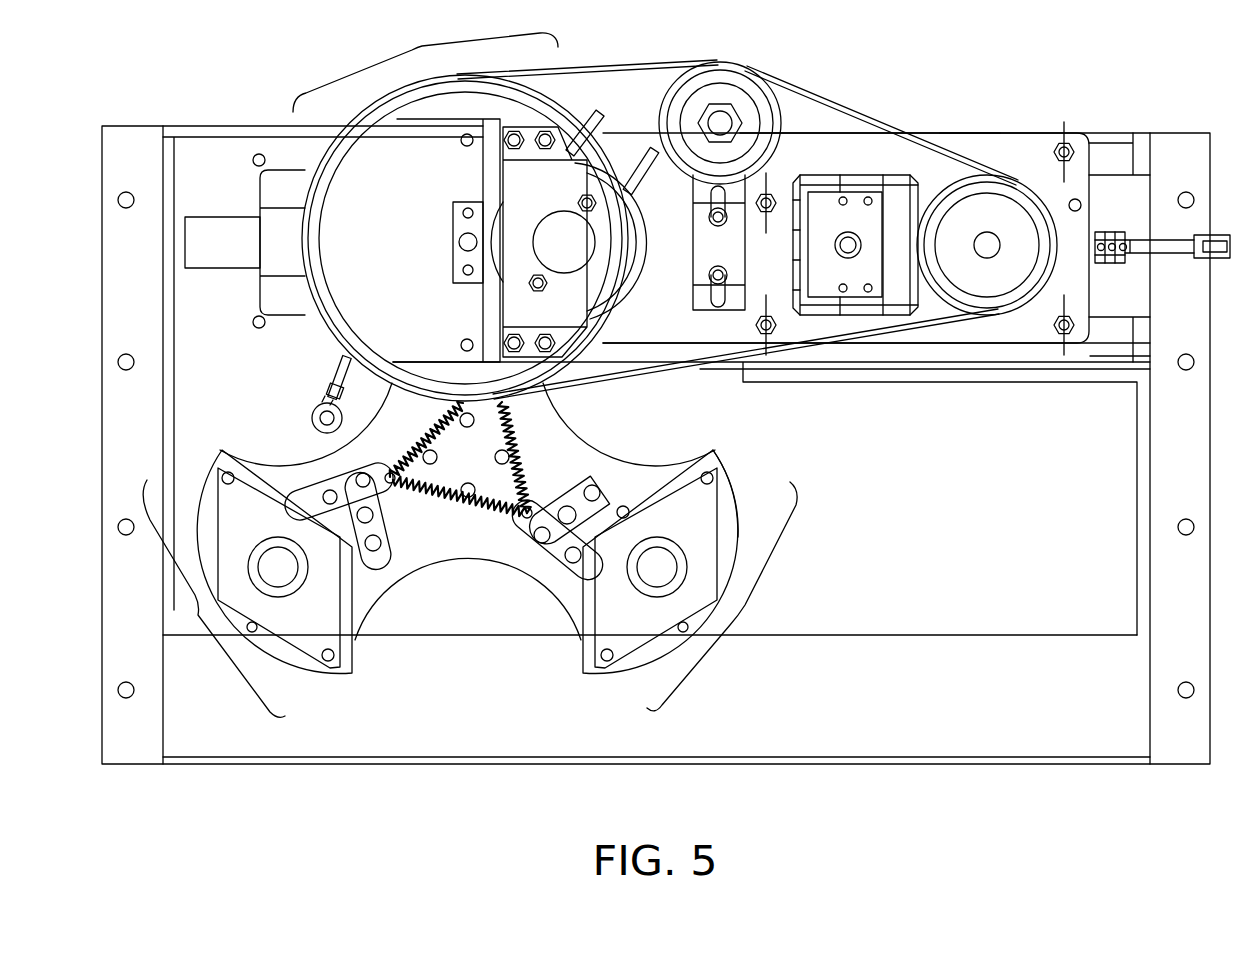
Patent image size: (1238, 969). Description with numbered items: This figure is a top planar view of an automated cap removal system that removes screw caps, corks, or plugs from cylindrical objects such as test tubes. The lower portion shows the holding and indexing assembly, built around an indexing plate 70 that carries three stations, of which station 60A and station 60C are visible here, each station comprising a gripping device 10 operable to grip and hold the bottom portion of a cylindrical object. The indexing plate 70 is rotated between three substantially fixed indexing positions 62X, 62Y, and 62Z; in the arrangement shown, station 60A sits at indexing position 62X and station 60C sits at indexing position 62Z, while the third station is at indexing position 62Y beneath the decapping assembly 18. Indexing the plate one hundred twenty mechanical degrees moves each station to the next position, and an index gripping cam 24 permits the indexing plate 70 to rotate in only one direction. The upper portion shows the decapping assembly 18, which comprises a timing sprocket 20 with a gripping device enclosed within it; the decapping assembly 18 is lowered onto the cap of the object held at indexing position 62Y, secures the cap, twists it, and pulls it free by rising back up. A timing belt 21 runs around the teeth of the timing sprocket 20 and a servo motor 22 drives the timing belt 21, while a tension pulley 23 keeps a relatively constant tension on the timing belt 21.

The gripping device 10 is at (305, 478).
The decapping assembly 18 is at (950, 147).
The timing sprocket 20 is at (385, 93).
The timing belt 21 is at (835, 110).
The servo motor 22 is at (990, 206).
The tension pulley 23 is at (728, 66).
The index gripping cam 24 is at (329, 388).
The station 60A is at (381, 642).
The station 60C is at (554, 642).
The indexing position 62X is at (198, 615).
The indexing position 62Y is at (420, 48).
The indexing position 62Z is at (733, 613).
The indexing plate 70 is at (745, 490).